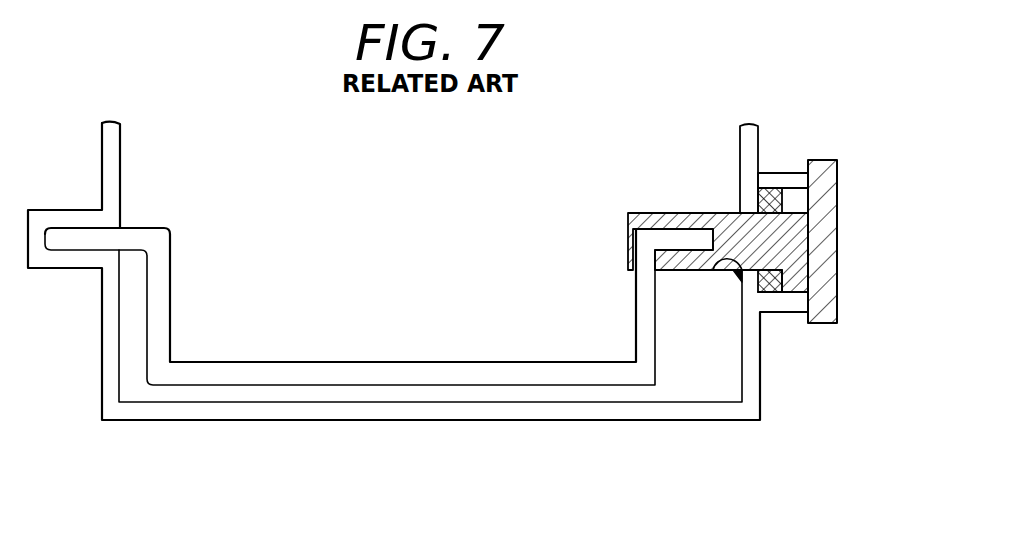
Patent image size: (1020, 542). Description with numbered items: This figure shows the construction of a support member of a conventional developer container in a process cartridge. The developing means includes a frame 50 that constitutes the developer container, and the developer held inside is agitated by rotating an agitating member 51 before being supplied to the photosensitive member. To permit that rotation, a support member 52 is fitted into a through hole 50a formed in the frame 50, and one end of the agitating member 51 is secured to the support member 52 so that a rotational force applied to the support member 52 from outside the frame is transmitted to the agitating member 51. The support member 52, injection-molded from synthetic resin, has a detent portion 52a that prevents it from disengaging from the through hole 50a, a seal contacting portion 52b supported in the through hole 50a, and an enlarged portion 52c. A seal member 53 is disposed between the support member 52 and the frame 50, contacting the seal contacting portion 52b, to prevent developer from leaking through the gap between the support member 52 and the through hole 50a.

The frame 50 is at (657, 408).
The through hole 50a is at (714, 273).
The agitating member 51 is at (390, 372).
The support member 52 is at (768, 196).
The detent portion 52a is at (733, 207).
The seal contacting portion 52b is at (760, 171).
The enlarged portion 52c is at (840, 266).
The seal member 53 is at (770, 313).